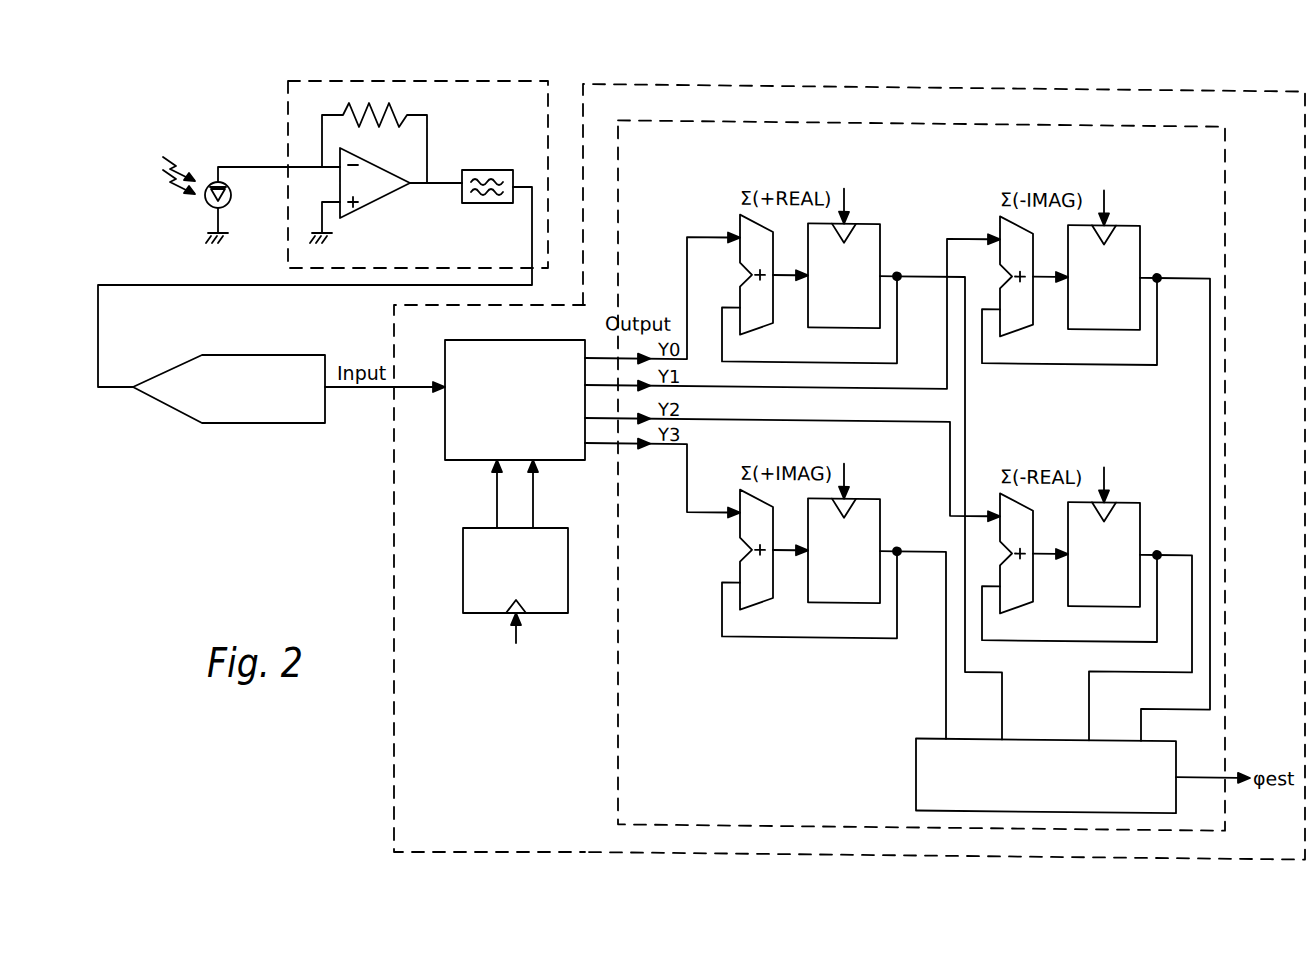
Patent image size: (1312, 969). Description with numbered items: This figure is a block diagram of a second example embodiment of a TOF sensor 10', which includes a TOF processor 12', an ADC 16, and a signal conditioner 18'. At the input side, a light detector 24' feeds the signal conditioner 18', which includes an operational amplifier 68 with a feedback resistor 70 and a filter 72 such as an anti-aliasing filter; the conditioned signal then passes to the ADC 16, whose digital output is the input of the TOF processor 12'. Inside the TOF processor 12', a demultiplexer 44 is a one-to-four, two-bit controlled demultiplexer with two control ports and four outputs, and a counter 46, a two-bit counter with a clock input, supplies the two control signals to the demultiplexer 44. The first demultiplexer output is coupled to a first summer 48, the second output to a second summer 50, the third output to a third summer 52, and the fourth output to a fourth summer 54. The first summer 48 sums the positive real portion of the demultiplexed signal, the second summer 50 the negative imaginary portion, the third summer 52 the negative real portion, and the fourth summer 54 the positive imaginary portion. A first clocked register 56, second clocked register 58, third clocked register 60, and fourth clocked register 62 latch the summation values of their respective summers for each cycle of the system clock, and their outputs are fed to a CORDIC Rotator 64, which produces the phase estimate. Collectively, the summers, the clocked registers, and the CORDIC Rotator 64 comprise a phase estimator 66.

The TOF sensor 10' is at (944, 445).
The TOF processor 12' is at (944, 445).
The signal conditioner 18' is at (418, 148).
The photodiode light detector 24' is at (251, 156).
The feedback resistor 70 is at (363, 108).
The operational amplifier 68 is at (373, 198).
The filter 72 is at (462, 168).
The ADC 16 is at (282, 418).
The demultiplexer 44 is at (478, 458).
The counter 46 is at (465, 600).
The first summer 48 is at (750, 320).
The first clocked register 56 is at (866, 323).
The second summer 50 is at (1010, 319).
The second clocked register 58 is at (1126, 322).
The fourth summer 54 is at (750, 595).
The fourth clocked register 62 is at (866, 598).
The third summer 52 is at (1010, 596).
The third clocked register 60 is at (1126, 599).
The CORDIC Rotator 64 is at (912, 748).
The phase estimator 66 is at (694, 822).